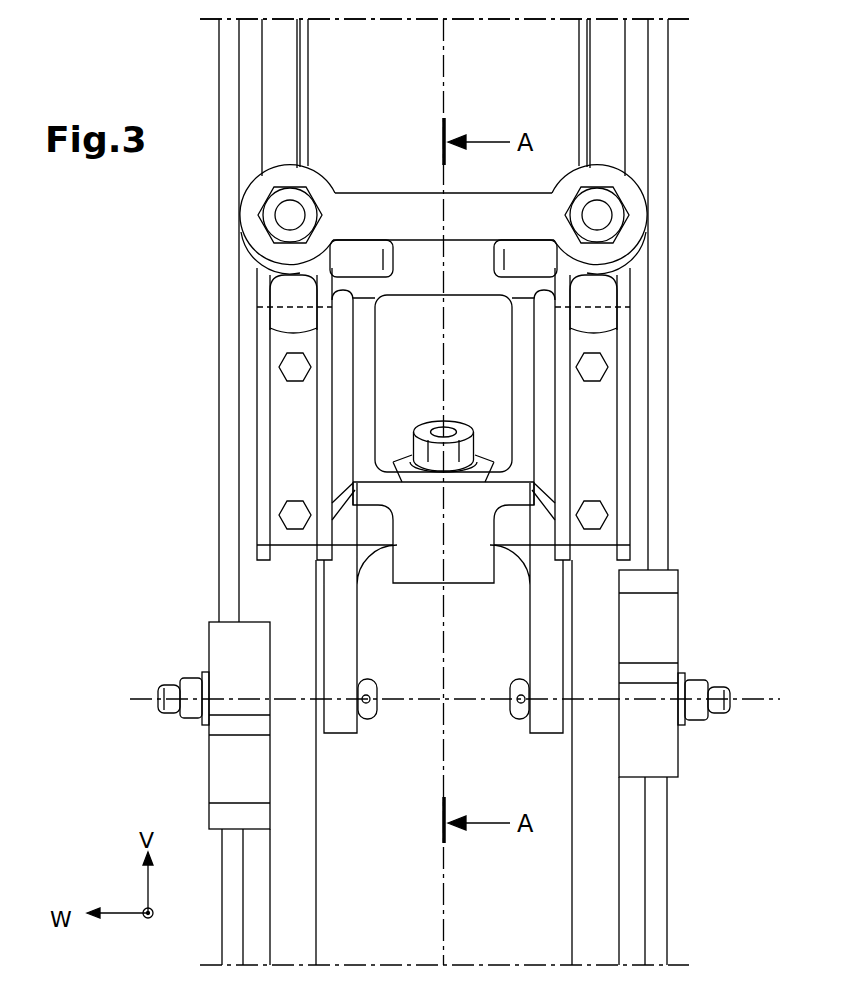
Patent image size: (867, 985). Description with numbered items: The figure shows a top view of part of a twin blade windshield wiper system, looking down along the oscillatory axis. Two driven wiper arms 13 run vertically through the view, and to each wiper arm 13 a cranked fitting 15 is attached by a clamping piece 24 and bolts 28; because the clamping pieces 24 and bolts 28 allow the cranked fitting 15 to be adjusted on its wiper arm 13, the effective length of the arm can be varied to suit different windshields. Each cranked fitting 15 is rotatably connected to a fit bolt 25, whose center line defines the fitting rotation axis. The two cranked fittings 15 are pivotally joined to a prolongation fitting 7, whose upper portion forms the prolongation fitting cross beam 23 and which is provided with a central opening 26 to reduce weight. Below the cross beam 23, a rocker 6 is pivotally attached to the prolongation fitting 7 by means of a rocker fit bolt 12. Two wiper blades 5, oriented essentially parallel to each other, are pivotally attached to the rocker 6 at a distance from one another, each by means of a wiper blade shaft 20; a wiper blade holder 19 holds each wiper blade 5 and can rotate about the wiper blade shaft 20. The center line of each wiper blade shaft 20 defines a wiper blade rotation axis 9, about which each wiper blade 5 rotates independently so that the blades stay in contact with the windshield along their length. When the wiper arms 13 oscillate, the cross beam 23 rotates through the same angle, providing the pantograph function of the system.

The wiper blade 5 is at (638, 57).
The rocker 6 is at (340, 590).
The prolongation fitting 7 is at (418, 570).
The wiper blade rotation axis 9 is at (122, 692).
The rocker fit bolt 12 is at (470, 440).
The wiper arm 13 is at (303, 897).
The cranked fitting 15 is at (598, 320).
The wiper blade holder 19 is at (653, 760).
The wiper blade shaft 20 is at (717, 685).
The prolongation fitting cross beam 23 is at (387, 268).
The clamping piece 24 is at (593, 415).
The fit bolt 25 is at (597, 212).
The central opening 26 is at (400, 410).
The bolt 28 is at (606, 367).